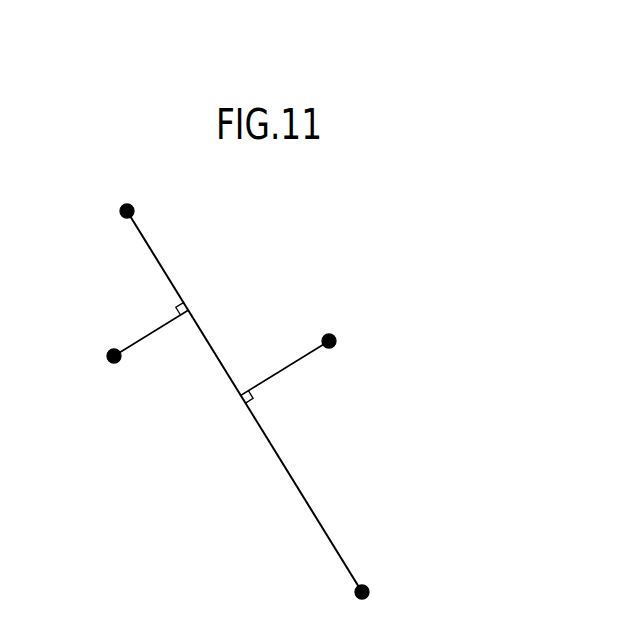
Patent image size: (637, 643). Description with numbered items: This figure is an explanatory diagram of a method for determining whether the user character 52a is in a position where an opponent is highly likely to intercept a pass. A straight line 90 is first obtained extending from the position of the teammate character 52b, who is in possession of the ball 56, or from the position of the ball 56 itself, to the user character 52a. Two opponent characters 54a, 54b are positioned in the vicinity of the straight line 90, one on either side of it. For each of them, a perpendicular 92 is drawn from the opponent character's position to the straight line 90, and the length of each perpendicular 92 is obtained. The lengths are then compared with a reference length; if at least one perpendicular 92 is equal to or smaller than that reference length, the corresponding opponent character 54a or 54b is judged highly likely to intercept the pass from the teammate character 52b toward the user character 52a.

The straight line 90 is at (317, 518).
The perpendicular 92 is at (136, 341).
The user character 52a is at (370, 592).
The teammate character 52b is at (130, 187).
The ball 56 is at (126, 205).
The opponent character 54a is at (337, 341).
The opponent character 54b is at (114, 363).